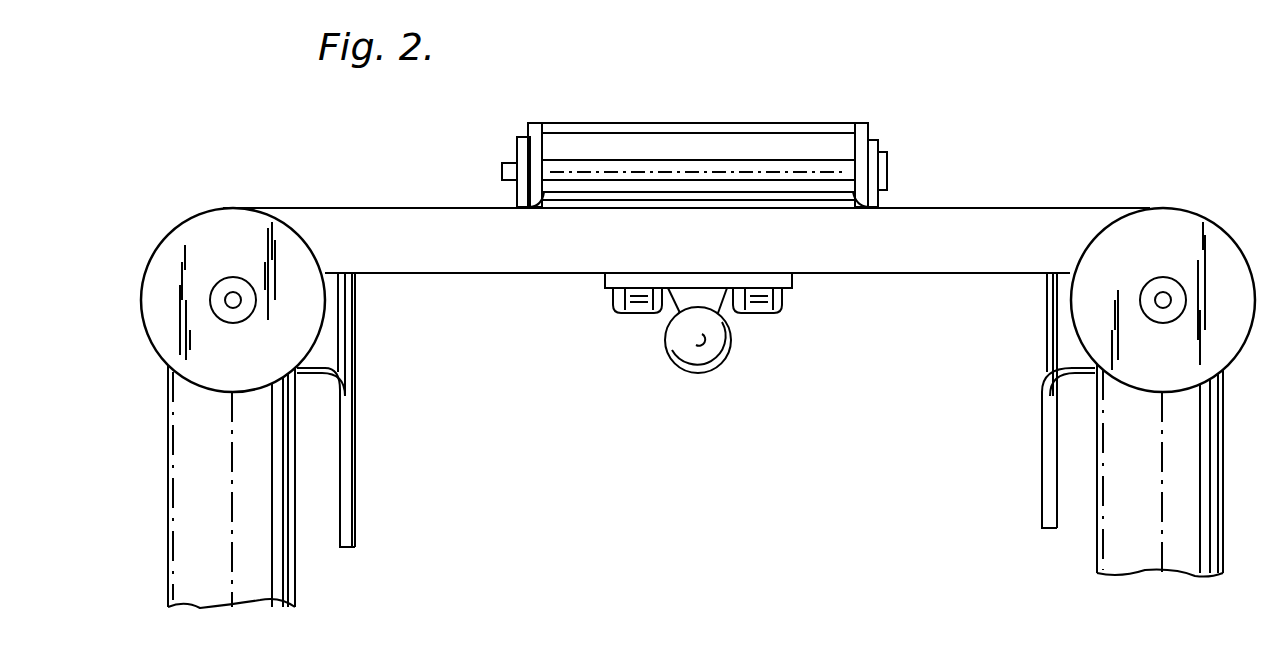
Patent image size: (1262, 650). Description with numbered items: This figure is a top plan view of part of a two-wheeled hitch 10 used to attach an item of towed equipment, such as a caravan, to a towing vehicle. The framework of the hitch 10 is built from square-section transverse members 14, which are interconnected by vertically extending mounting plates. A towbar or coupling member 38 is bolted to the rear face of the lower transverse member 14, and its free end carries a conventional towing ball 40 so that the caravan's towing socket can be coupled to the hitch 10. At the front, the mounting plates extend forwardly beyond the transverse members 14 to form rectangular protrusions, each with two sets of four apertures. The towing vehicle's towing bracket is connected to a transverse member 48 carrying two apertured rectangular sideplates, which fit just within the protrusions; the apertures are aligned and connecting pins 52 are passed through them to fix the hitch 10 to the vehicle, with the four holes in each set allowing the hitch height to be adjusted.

The two-wheeled hitch 10 is at (698, 342).
The transverse member 14 is at (512, 273).
The towbar or coupling member 38 is at (797, 283).
The towing ball 40 is at (678, 353).
The transverse member 48 is at (699, 142).
The connecting pin 52 is at (735, 165).